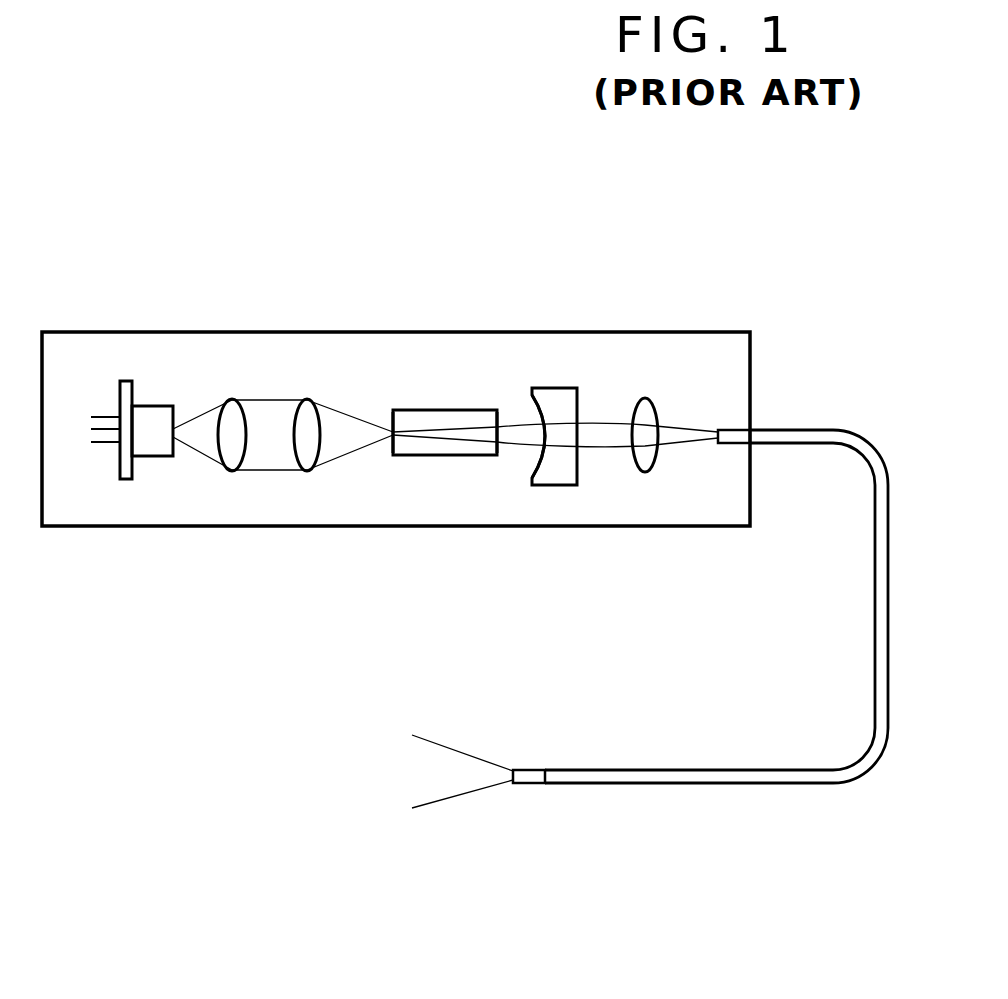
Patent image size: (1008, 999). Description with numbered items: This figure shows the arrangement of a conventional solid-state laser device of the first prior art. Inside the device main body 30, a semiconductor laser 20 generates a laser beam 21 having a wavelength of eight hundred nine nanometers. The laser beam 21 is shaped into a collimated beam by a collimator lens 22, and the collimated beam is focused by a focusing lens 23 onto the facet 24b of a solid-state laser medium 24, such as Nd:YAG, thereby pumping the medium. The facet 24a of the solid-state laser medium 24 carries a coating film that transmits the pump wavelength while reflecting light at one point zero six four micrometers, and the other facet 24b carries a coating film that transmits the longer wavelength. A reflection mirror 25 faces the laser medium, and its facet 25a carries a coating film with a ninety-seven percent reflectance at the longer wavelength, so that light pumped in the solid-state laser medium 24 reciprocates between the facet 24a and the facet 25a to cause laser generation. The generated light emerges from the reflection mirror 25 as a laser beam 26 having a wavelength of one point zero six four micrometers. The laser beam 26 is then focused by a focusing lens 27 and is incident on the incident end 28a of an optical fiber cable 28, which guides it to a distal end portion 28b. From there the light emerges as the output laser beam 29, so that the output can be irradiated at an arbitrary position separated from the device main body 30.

The semiconductor laser 20 is at (127, 381).
The laser beam 21 is at (202, 437).
The collimator lens 22 is at (232, 471).
The focusing lens 23 is at (307, 471).
The solid-state laser medium 24 is at (443, 420).
The facet 24a is at (393, 447).
The facet 24b is at (497, 455).
The reflection mirror 25 is at (562, 387).
The facet 25a is at (547, 435).
The laser beam 26 is at (608, 435).
The focusing lens 27 is at (645, 473).
The optical fiber cable 28 is at (872, 588).
The incident end 28a is at (720, 428).
The distal end portion 28b is at (512, 783).
The output laser beam 29 is at (428, 782).
The device main body 30 is at (311, 333).